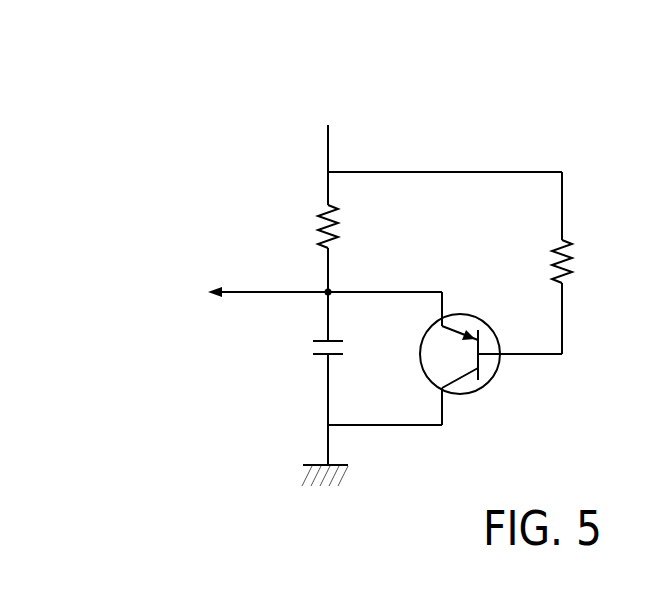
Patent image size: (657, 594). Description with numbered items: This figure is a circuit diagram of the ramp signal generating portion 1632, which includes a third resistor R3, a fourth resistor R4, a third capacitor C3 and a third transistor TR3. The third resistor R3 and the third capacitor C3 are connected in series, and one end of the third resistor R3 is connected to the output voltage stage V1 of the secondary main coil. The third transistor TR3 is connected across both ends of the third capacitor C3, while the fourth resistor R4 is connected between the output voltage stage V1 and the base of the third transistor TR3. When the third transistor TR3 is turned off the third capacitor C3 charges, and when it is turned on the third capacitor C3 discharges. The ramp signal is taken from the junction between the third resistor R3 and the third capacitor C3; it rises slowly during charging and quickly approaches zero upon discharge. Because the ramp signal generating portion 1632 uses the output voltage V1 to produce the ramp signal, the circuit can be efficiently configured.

The ramp signal generating portion 1632 is at (517, 112).
The output voltage stage V1 is at (326, 149).
The third resistor R3 is at (308, 226).
The fourth resistor R4 is at (579, 261).
The third capacitor C3 is at (310, 348).
The third transistor TR3 is at (478, 349).